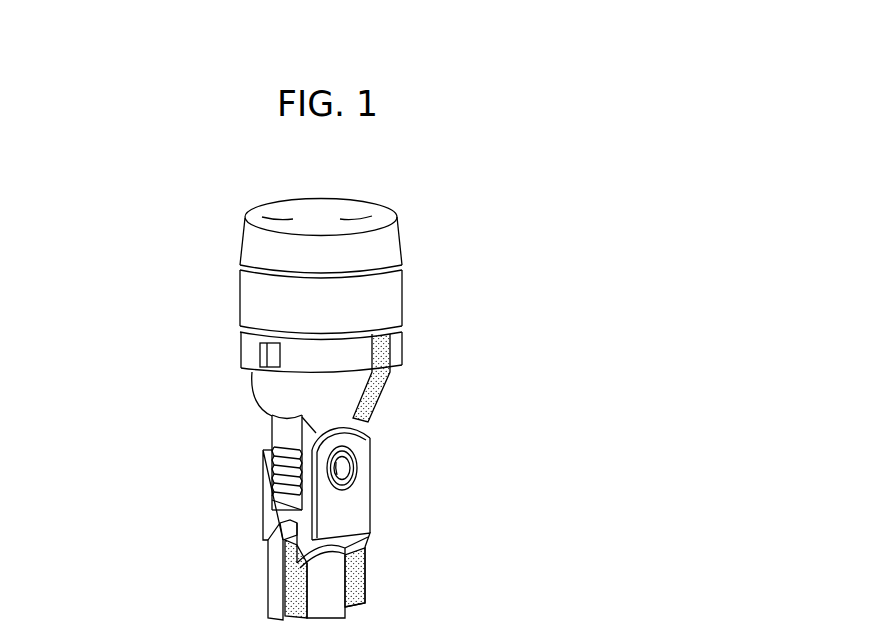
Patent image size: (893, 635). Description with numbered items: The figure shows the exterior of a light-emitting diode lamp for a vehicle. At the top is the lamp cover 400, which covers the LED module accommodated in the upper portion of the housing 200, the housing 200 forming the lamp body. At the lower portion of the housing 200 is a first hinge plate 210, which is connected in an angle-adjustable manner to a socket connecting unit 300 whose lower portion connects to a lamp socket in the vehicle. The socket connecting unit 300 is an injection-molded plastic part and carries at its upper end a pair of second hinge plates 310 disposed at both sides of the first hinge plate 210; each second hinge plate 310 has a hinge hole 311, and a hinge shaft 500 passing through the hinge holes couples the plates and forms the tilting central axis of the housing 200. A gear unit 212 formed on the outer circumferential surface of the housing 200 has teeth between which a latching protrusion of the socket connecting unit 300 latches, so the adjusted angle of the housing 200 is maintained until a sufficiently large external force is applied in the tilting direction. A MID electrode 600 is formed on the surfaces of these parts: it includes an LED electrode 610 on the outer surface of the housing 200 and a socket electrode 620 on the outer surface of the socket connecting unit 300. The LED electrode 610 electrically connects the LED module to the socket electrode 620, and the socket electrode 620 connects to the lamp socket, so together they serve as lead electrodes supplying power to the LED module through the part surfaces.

The housing 200 is at (224, 429).
The first hinge plate 210 is at (225, 462).
The gear unit 212 is at (280, 477).
The socket connecting unit 300 is at (262, 547).
The second hinge plate 310 is at (426, 482).
The hinge hole 311 is at (353, 450).
The lamp cover 400 is at (393, 292).
The hinge shaft 500 is at (343, 468).
The MID electrode 600 is at (151, 195).
The LED electrode 610 is at (462, 389).
The socket electrode 620 is at (437, 573).